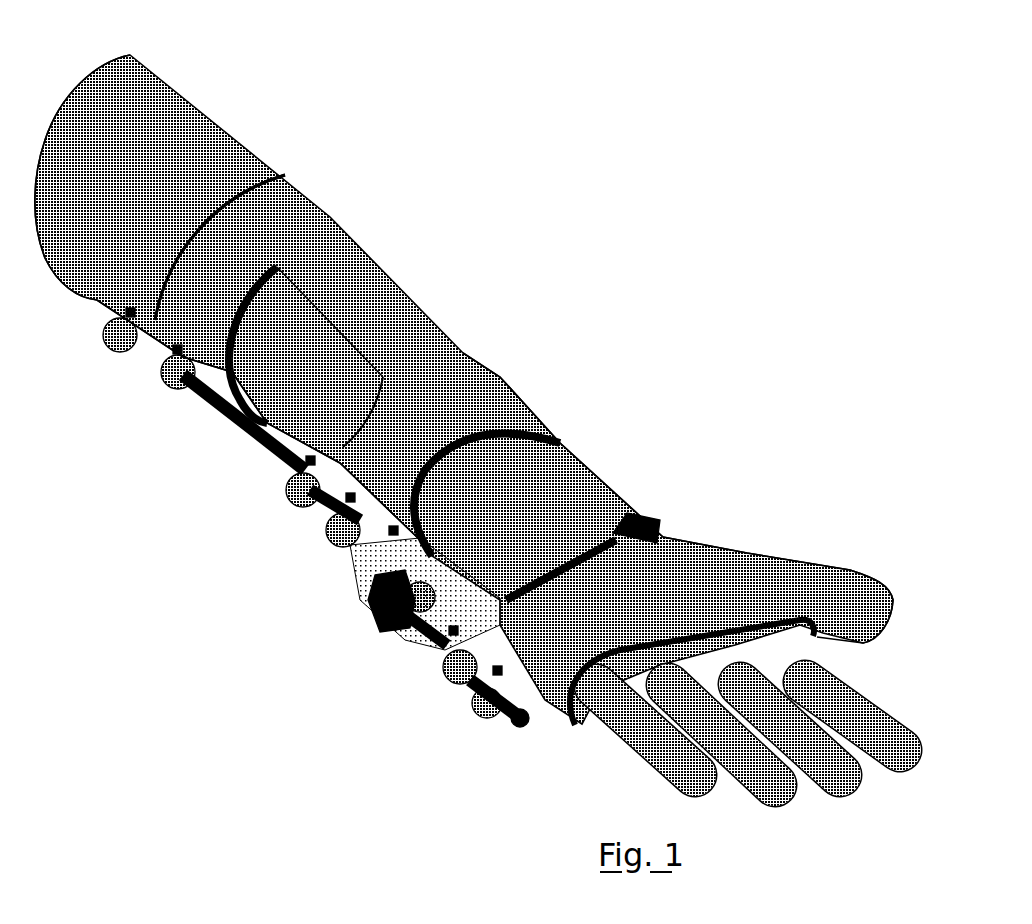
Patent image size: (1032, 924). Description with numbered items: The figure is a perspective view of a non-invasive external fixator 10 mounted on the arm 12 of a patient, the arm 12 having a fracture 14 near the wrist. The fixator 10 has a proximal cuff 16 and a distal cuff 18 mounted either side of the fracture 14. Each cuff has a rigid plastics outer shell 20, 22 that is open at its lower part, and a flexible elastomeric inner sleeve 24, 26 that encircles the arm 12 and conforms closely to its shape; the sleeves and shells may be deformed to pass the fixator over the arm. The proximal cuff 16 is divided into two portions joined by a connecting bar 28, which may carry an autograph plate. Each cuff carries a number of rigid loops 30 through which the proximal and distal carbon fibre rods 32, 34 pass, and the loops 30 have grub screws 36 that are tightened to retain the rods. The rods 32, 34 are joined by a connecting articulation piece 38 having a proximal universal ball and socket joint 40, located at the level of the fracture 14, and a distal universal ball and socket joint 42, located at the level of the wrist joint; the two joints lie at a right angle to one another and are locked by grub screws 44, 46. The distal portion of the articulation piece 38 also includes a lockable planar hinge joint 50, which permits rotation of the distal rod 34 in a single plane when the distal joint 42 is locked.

The non-invasive external fixator 10 is at (321, 168).
The arm 12 is at (203, 130).
The fracture 14 is at (553, 473).
The proximal cuff 16 is at (345, 253).
The distal cuff 18 is at (708, 580).
The rigid plastics outer shell 20 is at (484, 385).
The rigid plastics outer shell 22 is at (697, 580).
The flexible elastomeric inner sleeve 24 is at (528, 400).
The flexible elastomeric inner sleeve 26 is at (633, 512).
The connecting bar 28 is at (372, 300).
The rigid loops 30 is at (120, 338).
The proximal carbon fibre rod 32 is at (233, 436).
The distal carbon fibre rod 34 is at (460, 672).
The grub screws 36 is at (160, 375).
The connecting articulation piece 38 is at (380, 617).
The proximal universal ball and socket joint 40 is at (377, 583).
The distal universal ball and socket joint 42 is at (442, 650).
The grub screw 44 is at (368, 548).
The grub screw 46 is at (427, 640).
The lockable planar hinge joint 50 is at (427, 600).